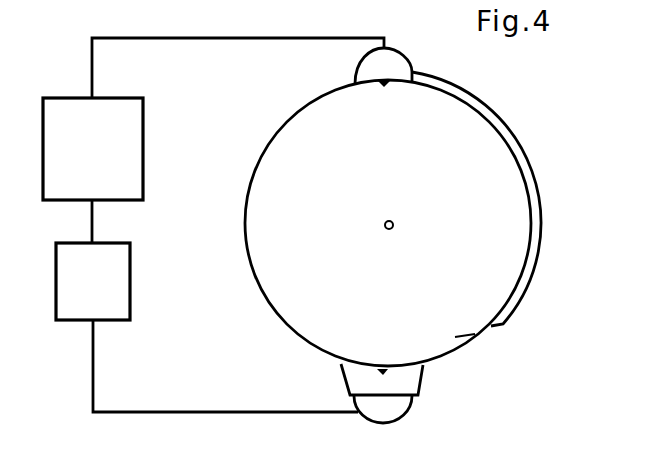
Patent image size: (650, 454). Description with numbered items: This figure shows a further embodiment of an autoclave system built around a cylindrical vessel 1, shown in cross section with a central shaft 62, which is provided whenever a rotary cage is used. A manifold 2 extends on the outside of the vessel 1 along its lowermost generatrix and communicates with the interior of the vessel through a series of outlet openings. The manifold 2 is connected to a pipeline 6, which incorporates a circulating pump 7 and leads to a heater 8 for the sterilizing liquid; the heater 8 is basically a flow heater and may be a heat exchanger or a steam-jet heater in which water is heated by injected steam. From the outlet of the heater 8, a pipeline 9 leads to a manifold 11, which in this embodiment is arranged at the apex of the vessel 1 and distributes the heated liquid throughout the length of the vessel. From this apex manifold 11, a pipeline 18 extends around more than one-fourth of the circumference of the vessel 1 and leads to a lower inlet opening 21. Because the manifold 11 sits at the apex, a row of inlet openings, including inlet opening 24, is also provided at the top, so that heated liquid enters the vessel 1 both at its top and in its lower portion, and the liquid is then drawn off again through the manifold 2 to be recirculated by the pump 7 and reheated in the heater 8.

The vessel 1 is at (282, 137).
The manifold 2 is at (410, 381).
The pipeline 6 is at (181, 411).
The circulating pump 7 is at (59, 288).
The heater 8 is at (49, 158).
The pipeline 9 is at (244, 41).
The manifold 11 is at (393, 48).
The pipeline 18 is at (513, 128).
The lower inlet opening 21 is at (478, 334).
The inlet opening 24 is at (384, 87).
The central shaft 62 is at (393, 229).